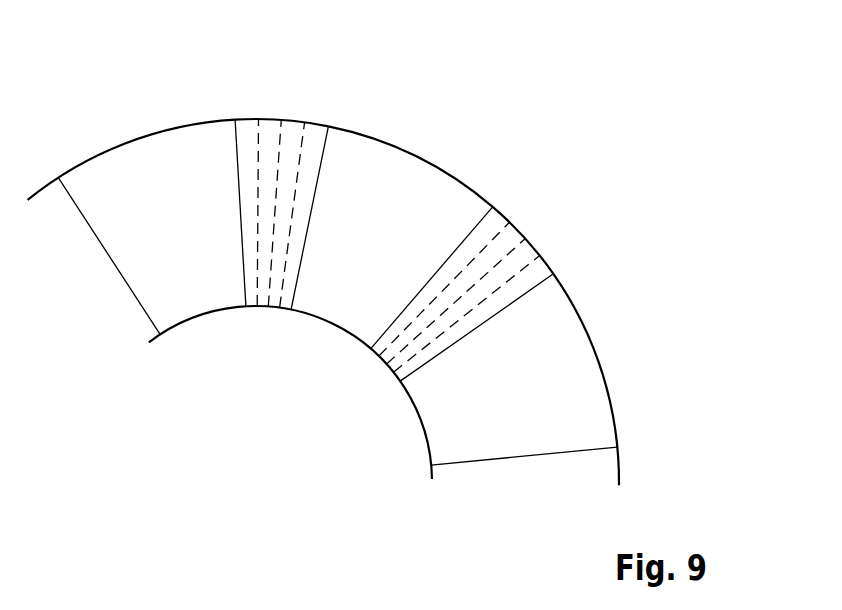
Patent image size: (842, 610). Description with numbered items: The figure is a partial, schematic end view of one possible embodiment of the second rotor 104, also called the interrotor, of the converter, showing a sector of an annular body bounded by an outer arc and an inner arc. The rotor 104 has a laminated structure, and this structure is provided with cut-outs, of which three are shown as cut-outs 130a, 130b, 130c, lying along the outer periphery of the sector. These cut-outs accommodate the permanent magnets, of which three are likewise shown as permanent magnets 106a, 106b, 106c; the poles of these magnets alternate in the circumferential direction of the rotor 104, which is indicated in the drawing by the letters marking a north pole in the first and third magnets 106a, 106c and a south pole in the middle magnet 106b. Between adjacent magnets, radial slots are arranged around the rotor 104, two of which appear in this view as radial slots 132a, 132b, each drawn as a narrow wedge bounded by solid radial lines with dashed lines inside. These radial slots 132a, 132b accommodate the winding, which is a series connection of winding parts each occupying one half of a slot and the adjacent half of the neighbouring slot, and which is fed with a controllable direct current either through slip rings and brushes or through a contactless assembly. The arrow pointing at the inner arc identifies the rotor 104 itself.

The second rotor 104 is at (336, 342).
The permanent magnet 106a is at (138, 237).
The permanent magnet 106b is at (345, 223).
The permanent magnet 106c is at (497, 357).
The cut-out 130a is at (188, 122).
The cut-out 130b is at (458, 175).
The cut-out 130c is at (615, 400).
The radial slot 132a is at (290, 138).
The radial slot 132b is at (527, 257).